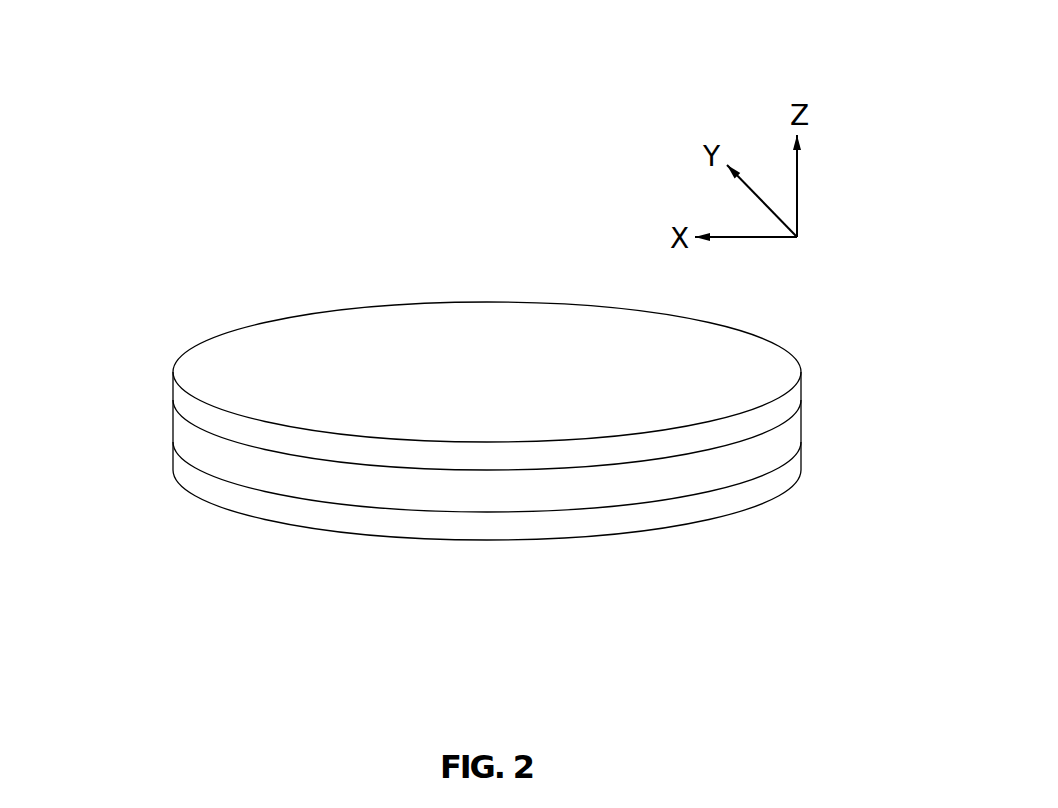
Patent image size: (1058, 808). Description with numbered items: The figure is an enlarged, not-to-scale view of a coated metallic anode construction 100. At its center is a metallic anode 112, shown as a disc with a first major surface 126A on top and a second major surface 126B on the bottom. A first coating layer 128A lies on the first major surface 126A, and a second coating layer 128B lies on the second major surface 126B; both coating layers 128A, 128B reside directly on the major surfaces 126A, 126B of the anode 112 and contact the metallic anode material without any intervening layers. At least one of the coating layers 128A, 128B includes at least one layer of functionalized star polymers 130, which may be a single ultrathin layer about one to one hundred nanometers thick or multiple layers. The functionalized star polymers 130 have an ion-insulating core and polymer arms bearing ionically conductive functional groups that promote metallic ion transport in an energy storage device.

The coated metallic anode construction 100 is at (285, 115).
The metallic anode 112 is at (230, 462).
The first major surface 126A is at (186, 421).
The second major surface 126B is at (781, 471).
The first coating layer 128A is at (243, 348).
The second coating layer 128B is at (268, 503).
The functionalized star polymers 130 is at (478, 372).